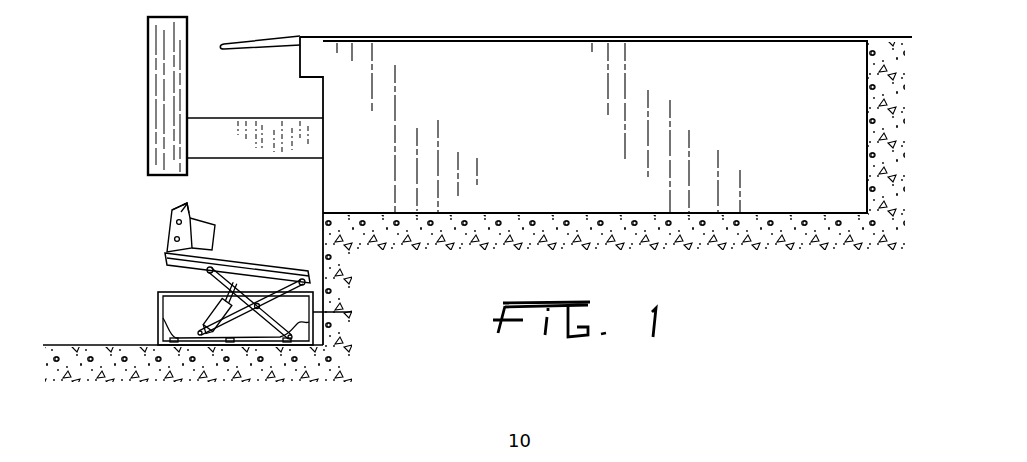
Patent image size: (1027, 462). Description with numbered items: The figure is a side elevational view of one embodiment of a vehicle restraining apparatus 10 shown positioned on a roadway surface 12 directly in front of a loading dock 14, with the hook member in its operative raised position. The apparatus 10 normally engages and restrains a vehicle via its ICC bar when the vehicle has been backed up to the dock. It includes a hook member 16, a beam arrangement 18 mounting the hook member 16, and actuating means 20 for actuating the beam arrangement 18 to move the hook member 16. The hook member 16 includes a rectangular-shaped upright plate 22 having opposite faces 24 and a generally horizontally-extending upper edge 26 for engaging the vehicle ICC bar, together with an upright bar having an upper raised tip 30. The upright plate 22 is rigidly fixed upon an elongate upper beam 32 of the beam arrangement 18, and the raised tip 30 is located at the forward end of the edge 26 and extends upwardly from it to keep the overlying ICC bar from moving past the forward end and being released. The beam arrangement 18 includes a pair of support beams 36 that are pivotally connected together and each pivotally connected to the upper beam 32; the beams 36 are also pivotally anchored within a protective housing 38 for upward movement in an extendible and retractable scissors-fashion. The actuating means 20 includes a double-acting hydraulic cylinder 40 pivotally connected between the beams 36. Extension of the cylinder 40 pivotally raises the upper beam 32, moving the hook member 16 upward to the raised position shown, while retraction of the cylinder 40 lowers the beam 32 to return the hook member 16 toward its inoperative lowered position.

The vehicle restraining apparatus 10 is at (238, 228).
The roadway surface 12 is at (77, 343).
The loading dock 14 is at (318, 174).
The hook member 16 is at (197, 203).
The beam arrangement 18 is at (293, 259).
The actuating means 20 is at (201, 309).
The upright plate 22 is at (215, 237).
The opposite faces 24 is at (211, 228).
The upper edge 26 is at (208, 221).
The raised tip 30 is at (183, 204).
The upper beam 32 is at (167, 253).
The support beams 36 is at (270, 318).
The protective housing 38 is at (352, 312).
The hydraulic cylinder 40 is at (200, 327).